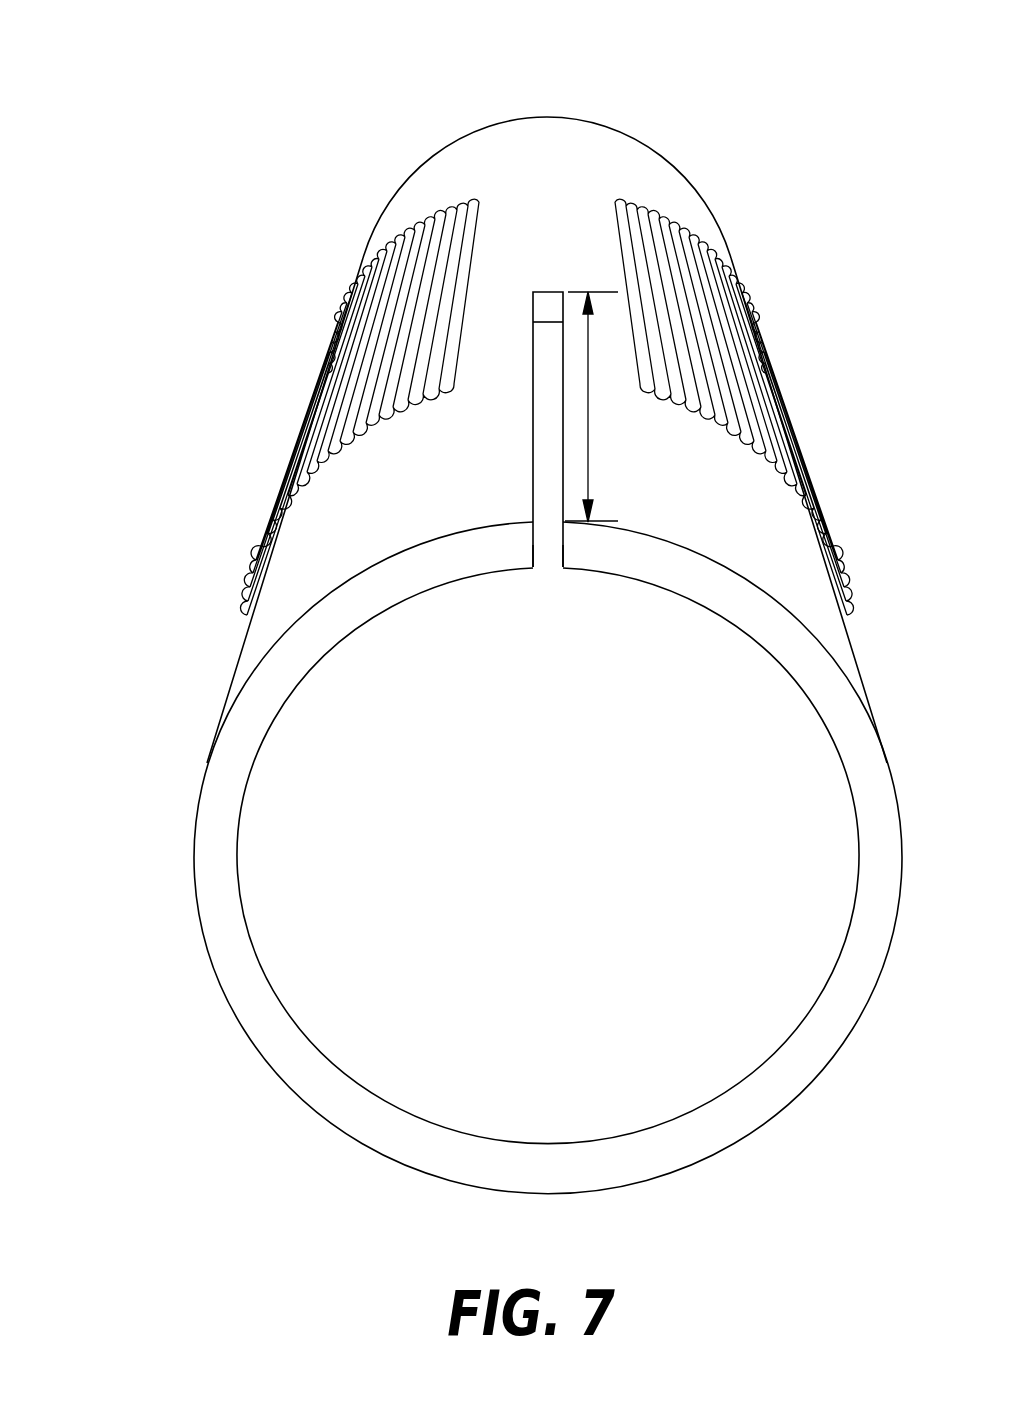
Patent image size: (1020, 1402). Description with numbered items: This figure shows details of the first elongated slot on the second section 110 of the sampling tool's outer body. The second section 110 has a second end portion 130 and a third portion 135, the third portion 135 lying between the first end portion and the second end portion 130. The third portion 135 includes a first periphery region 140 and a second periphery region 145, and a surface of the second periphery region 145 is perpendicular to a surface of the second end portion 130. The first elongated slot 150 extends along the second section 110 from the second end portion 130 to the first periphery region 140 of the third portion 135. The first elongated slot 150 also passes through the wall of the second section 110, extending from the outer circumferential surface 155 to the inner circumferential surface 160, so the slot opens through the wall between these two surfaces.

The second section 110 is at (210, 569).
The second end portion 130 is at (592, 552).
The third portion 135 is at (607, 425).
The first periphery region 140 is at (541, 268).
The second periphery region 145 is at (522, 510).
The first elongated slot 150 is at (547, 404).
The outer circumferential surface 155 is at (418, 455).
The inner circumferential surface 160 is at (490, 582).